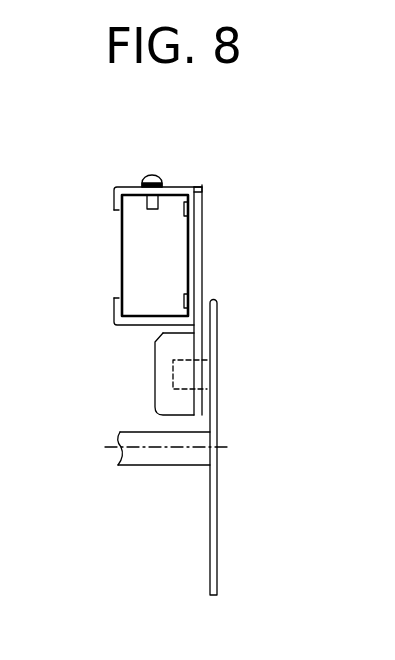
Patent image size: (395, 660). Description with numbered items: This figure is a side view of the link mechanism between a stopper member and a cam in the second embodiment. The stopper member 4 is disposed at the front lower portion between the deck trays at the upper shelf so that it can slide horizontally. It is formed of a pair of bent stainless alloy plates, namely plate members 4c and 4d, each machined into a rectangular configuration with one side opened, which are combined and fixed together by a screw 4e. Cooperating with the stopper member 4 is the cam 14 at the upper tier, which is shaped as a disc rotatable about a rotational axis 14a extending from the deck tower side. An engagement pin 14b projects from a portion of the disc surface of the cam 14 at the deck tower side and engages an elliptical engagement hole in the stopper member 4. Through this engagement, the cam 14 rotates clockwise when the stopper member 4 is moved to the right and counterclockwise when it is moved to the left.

The stopper member 4 is at (203, 243).
The plate member 4c is at (200, 185).
The plate member 4d is at (121, 267).
The screw 4e is at (150, 174).
The cam 14 is at (218, 392).
The rotational axis 14a is at (157, 457).
The engagement pin 14b is at (183, 355).